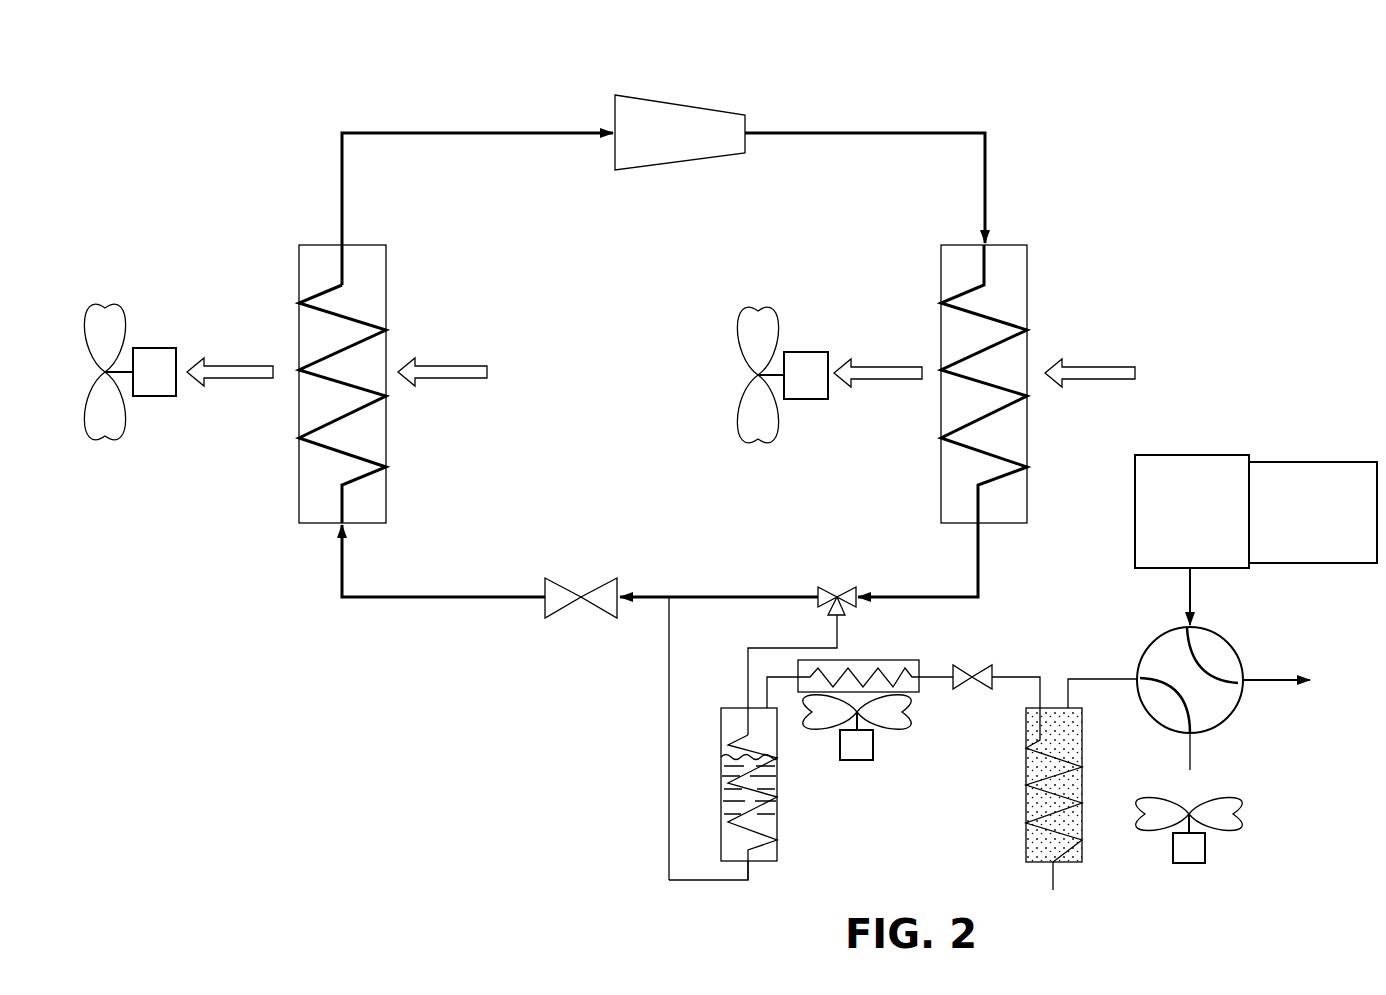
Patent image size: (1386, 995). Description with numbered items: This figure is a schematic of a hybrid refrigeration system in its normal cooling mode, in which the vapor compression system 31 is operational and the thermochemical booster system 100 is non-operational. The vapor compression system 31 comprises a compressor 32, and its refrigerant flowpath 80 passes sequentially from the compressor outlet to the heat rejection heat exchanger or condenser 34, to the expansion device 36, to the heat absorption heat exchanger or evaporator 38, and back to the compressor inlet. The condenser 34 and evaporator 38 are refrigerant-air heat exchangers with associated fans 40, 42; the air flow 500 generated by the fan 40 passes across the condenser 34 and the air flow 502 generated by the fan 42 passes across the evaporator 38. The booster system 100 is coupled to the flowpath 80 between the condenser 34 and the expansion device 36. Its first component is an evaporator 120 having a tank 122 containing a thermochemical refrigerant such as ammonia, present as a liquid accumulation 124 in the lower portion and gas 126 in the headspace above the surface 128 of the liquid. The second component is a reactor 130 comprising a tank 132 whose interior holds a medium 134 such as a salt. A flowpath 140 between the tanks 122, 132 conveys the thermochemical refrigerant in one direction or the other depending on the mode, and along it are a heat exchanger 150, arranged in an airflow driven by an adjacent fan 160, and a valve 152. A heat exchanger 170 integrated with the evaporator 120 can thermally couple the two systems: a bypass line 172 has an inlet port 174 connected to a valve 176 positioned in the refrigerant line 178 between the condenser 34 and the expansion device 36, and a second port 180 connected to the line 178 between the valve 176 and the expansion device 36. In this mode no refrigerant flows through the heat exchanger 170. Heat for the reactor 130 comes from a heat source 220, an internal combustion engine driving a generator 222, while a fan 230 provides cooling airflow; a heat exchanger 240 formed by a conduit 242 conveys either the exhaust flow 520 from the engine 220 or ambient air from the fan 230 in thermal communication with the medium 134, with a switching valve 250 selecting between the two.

The vapor compression system 31 is at (928, 83).
The compressor 32 is at (657, 150).
The refrigerant flowpath 80 is at (996, 122).
The heat rejection heat exchanger 34 is at (1037, 236).
The fan 40 is at (809, 346).
The air flow 500 is at (897, 366).
The heat absorption heat exchanger 38 is at (398, 484).
The fan 42 is at (157, 404).
The air flow 502 is at (255, 365).
The expansion device 36 is at (578, 617).
The second port 180 is at (669, 594).
The valve 176 is at (845, 572).
The refrigerant line 178 is at (978, 562).
The inlet port 174 is at (840, 622).
The flowpath 140 is at (932, 650).
The gas 126 is at (727, 720).
The evaporator 120 is at (779, 799).
The tank 122 is at (780, 852).
The liquid accumulation 124 is at (770, 765).
The surface 128 is at (730, 745).
The heat exchanger 170 is at (760, 840).
The bypass line 172 is at (669, 780).
The heat exchanger 150 is at (917, 698).
The fan 160 is at (877, 749).
The valve 152 is at (973, 692).
The reactor 130 is at (1043, 800).
The tank 132 is at (1026, 850).
The medium 134 is at (1068, 748).
The heat exchanger 240 is at (1050, 838).
The conduit 242 is at (1090, 678).
The switching valve 250 is at (1239, 729).
The heat source 220 is at (1174, 530).
The generator 222 is at (1293, 530).
The fan 230 is at (1222, 849).
The exhaust flow 520 is at (1265, 677).
The thermochemical booster system 100 is at (1192, 901).